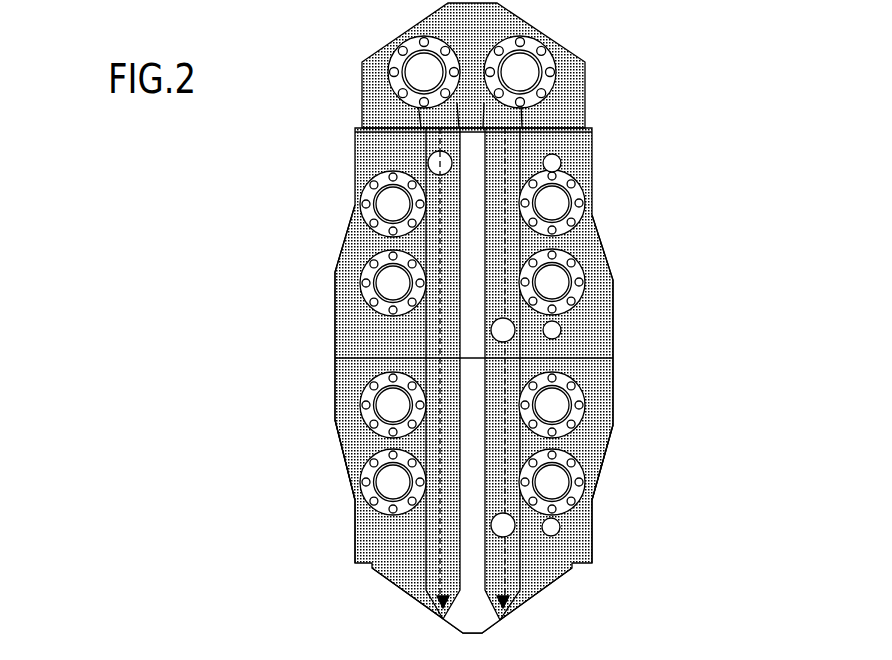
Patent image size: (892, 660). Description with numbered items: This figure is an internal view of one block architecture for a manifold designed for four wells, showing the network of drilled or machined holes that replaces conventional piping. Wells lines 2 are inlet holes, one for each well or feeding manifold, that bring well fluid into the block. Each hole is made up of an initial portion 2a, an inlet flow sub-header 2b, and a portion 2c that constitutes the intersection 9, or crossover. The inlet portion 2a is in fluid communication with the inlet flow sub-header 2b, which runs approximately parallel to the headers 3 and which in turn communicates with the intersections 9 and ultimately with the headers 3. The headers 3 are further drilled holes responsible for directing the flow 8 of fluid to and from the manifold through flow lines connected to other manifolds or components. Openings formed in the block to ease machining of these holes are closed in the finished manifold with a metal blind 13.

The wells lines 2 is at (341, 223).
The initial portion 2a is at (587, 450).
The inlet flow sub-header 2b is at (560, 552).
The portion constituting the intersection 2c is at (530, 160).
The headers 3 is at (423, 116).
The flow 8 is at (335, 359).
The intersections 9 is at (557, 167).
The metal blind 13 is at (612, 327).